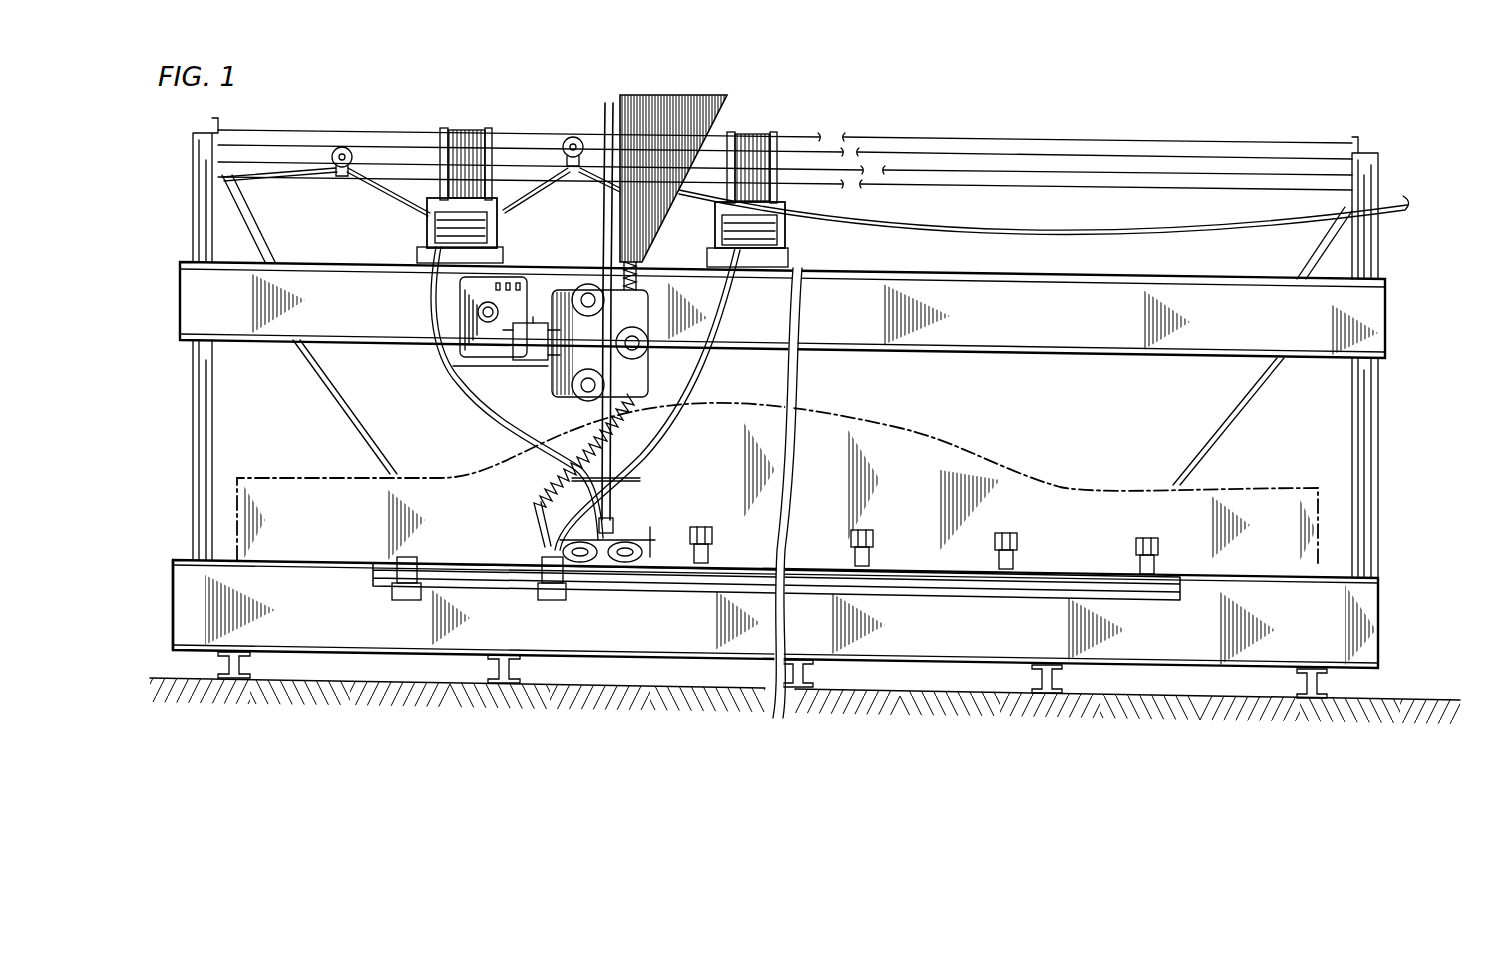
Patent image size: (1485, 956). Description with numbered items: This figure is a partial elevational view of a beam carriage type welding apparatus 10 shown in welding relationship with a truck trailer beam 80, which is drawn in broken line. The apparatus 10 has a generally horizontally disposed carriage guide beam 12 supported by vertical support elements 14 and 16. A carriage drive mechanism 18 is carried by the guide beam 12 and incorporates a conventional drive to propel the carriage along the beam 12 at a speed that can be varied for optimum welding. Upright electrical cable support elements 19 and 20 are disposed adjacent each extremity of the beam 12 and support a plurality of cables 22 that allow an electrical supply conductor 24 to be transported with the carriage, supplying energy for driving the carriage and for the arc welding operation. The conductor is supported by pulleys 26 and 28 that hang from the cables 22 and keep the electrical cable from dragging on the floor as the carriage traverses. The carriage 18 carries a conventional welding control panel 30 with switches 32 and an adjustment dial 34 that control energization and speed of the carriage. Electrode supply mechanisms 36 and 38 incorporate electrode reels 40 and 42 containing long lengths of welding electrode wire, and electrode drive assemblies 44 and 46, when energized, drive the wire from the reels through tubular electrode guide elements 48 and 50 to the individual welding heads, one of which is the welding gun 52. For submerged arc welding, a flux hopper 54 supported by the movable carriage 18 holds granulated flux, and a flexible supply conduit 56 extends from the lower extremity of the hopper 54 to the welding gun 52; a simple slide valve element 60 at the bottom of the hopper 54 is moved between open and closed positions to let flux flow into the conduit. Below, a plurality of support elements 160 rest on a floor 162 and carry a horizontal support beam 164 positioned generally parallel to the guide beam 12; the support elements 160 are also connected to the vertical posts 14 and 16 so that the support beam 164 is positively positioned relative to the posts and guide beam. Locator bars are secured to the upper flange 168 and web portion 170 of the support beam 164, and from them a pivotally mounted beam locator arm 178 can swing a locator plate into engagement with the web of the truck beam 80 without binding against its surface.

The beam carriage type welding apparatus 10 is at (588, 102).
The carriage guide beam 12 is at (1022, 313).
The vertical support element 14 is at (190, 457).
The vertical support element 16 is at (1362, 455).
The carriage drive mechanism 18 is at (587, 238).
The left upright 19 is at (196, 216).
The upright electrical cable support element 20 is at (1367, 262).
The cables 22 is at (1053, 160).
The electrical supply conductor 24 is at (1190, 222).
The pulley 26 is at (342, 146).
The pulley 28 is at (565, 138).
The welding control panel 30 is at (484, 329).
The switches 32 is at (518, 279).
The adjustment dial 34 is at (478, 312).
The electrode supply mechanism 36 is at (427, 218).
The electrode supply mechanism 38 is at (786, 246).
The electrode reel 40 is at (447, 163).
The electrode reel 42 is at (779, 160).
The electrode drive assembly 44 is at (440, 231).
The electrode drive assembly 46 is at (770, 231).
The tubular electrode guide element 48 is at (482, 410).
The tubular electrode guide element 50 is at (697, 400).
The welding gun 52 is at (556, 553).
The flux hopper 54 is at (697, 95).
The flexible supply conduit 56 is at (639, 402).
The slide valve element 60 is at (631, 254).
The truck trailer beam 80 is at (969, 447).
The support elements 160 is at (813, 674).
The floor 162 is at (592, 682).
The horizontal support beam 164 is at (400, 640).
The upper flange 168 is at (1325, 576).
The web portion 170 is at (176, 640).
The beam locator arm 178 is at (1022, 537).